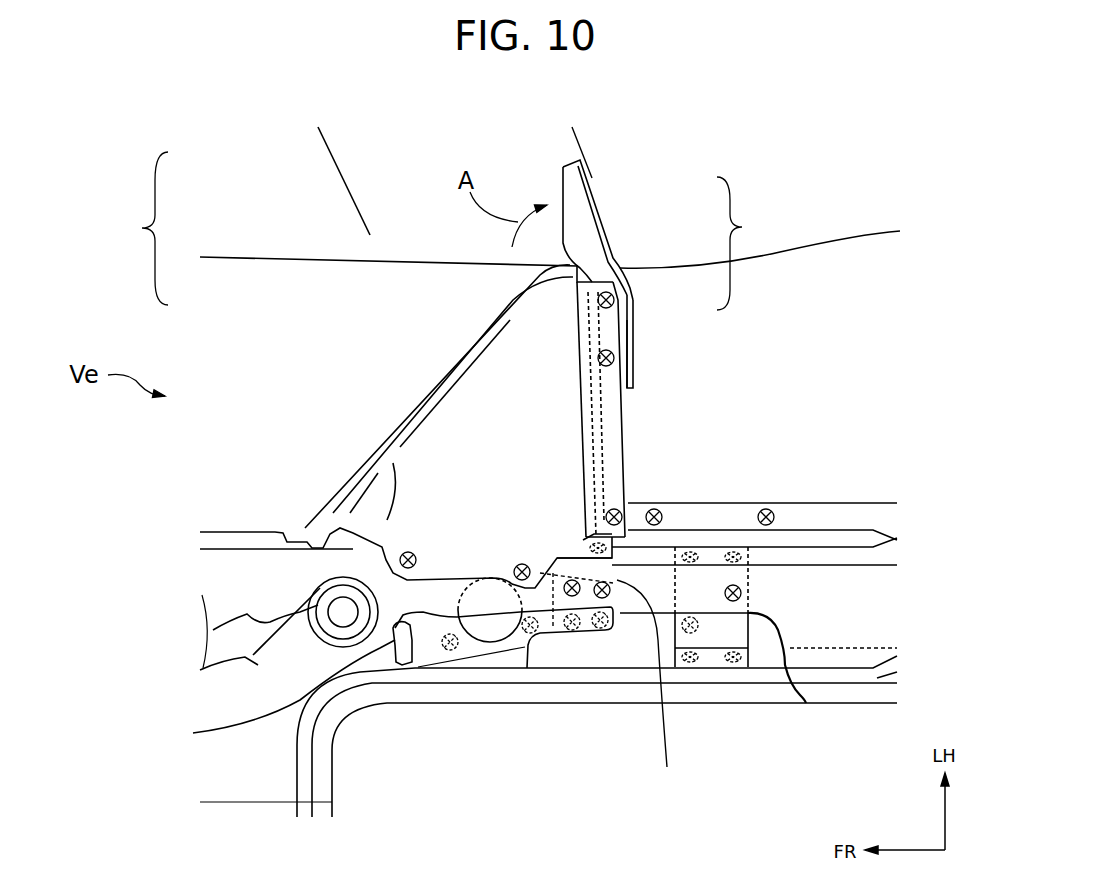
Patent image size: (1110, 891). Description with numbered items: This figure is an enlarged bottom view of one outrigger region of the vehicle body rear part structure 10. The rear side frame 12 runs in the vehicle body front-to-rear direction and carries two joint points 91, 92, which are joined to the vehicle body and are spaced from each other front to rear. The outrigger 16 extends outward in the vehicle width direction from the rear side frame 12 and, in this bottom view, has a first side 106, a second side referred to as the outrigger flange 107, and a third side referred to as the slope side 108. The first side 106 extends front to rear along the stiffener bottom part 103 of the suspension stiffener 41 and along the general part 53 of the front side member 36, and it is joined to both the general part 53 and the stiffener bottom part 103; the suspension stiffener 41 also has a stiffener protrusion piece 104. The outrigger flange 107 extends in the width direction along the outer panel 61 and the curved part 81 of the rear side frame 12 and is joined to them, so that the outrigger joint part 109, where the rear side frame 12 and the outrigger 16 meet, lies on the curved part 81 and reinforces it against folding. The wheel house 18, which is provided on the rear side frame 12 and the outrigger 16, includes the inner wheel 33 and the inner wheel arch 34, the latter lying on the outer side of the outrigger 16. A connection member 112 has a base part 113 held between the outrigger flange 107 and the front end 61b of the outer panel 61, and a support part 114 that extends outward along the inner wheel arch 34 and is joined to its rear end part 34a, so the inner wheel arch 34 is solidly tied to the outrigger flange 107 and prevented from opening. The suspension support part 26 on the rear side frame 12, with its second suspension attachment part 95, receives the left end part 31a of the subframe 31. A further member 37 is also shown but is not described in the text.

The vehicle body rear part structure 10 is at (185, 468).
The rear side frame 12 is at (845, 490).
The outrigger 16 is at (410, 372).
The wheel house 18 is at (135, 228).
The suspension support part 26 is at (330, 590).
The subframe 31 is at (240, 655).
The left end part 31a is at (215, 632).
The inner wheel 33 is at (258, 294).
The inner wheel arch 34 is at (255, 170).
The rear end part 34a is at (565, 150).
The front side member 36 is at (568, 677).
The side sill inner 37 is at (770, 657).
The suspension stiffener 41 is at (410, 640).
The general part 53 is at (378, 560).
The outer panel 61 is at (835, 268).
The front end 61b is at (638, 350).
The curved part 81 is at (651, 688).
The joint point 91 is at (654, 505).
The joint point 92 is at (765, 505).
The second suspension attachment part 95 is at (309, 551).
The stiffener bottom part 103 is at (433, 562).
The stiffener protrusion piece 104 is at (590, 630).
The first side 106 is at (457, 562).
The outrigger flange 107 is at (617, 425).
The slope side 108 is at (490, 373).
The outrigger joint part 109 is at (605, 515).
The connection member 112 is at (754, 243).
The base part 113 is at (620, 320).
The support part 114 is at (590, 218).